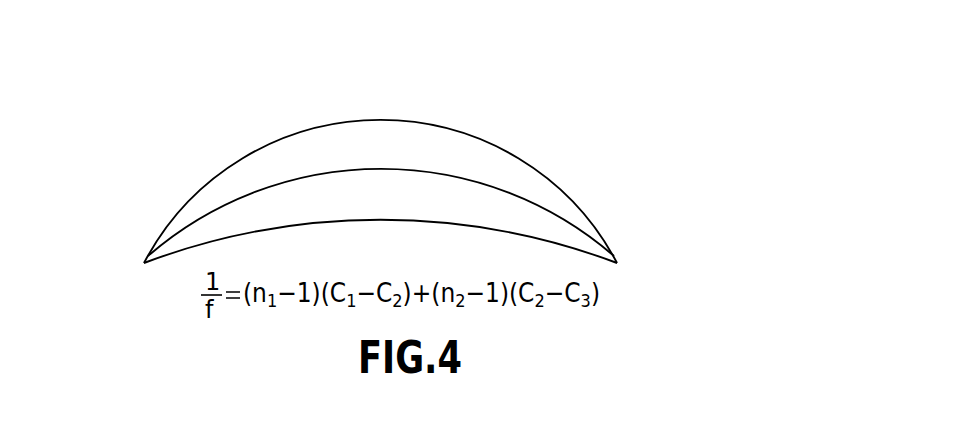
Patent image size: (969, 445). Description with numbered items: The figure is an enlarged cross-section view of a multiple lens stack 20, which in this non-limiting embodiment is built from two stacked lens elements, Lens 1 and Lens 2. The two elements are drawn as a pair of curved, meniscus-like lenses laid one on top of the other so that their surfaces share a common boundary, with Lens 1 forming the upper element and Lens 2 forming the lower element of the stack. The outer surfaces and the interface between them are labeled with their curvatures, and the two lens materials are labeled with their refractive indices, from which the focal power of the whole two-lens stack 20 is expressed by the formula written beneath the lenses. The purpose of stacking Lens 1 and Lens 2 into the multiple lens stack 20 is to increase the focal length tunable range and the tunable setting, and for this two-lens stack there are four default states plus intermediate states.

The multiple lens stack 20 is at (433, 159).
The Lens 1 is at (190, 198).
The Lens 2 is at (163, 248).